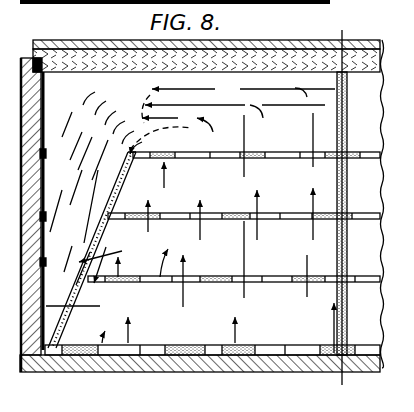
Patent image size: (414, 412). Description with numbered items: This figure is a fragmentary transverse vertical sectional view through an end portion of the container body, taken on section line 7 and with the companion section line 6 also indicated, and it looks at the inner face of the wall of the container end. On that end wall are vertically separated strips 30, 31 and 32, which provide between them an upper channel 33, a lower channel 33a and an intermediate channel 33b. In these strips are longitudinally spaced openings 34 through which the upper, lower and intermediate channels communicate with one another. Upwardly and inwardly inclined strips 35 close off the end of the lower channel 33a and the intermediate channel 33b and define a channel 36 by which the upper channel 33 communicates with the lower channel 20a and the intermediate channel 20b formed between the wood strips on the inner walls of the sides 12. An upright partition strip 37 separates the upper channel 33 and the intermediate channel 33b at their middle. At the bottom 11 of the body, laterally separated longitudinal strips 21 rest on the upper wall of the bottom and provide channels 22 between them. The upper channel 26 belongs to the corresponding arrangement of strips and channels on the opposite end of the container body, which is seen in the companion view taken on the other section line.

The section line 6— 6 is at (413, 20).
The section line 7— 7 is at (68, 22).
The bottom 11 is at (302, 2).
The sides 12 is at (17, 82).
The lower channel 20a is at (80, 319).
The intermediate channel 20b is at (50, 194).
The longitudinal strips 21 is at (278, 337).
The channels 22 is at (213, 337).
The upper channel 26 is at (413, 124).
The strip 30 is at (222, 206).
The strip 31 is at (243, 209).
The strip 32 is at (217, 275).
The upper channel 33 is at (356, 82).
The lower channel 33a is at (89, 356).
The intermediate channel 33b is at (150, 292).
The openings 34 is at (303, 152).
The upwardly and inwardly inclined strips 35 is at (122, 190).
The channel 36 is at (123, 258).
The upright partition strip 37 is at (347, 183).